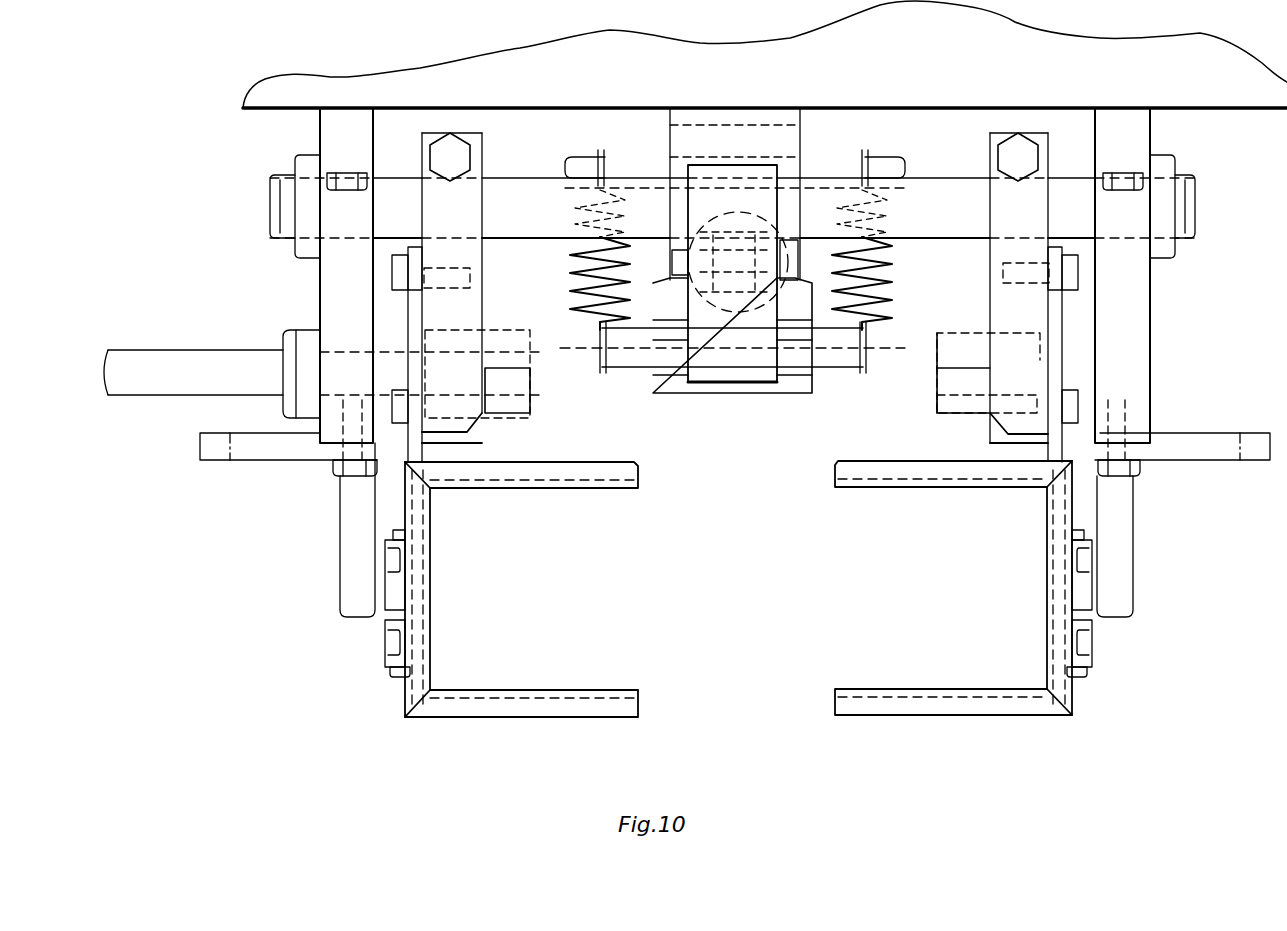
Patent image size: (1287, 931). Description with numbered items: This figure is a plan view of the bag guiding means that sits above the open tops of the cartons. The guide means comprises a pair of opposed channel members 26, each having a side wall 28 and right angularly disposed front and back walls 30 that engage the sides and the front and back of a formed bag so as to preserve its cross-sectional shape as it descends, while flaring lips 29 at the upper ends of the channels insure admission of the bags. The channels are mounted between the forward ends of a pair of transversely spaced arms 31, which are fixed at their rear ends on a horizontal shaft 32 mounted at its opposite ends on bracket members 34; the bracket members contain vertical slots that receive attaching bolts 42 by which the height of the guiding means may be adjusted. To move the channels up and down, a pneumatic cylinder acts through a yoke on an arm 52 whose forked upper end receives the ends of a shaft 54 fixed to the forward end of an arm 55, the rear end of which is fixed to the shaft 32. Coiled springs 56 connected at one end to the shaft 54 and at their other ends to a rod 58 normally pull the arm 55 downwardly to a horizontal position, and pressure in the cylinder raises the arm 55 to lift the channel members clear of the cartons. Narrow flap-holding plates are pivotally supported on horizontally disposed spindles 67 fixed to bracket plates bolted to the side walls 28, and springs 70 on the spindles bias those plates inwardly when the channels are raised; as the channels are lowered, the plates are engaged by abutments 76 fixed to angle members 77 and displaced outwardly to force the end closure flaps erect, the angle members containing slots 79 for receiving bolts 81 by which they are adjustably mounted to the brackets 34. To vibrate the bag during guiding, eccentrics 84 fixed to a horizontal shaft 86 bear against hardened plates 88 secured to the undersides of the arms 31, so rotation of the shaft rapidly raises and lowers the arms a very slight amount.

The channel member 26 is at (810, 674).
The side wall 28 is at (430, 508).
The flaring lip 29 is at (645, 480).
The front and back walls 30 is at (545, 482).
The arm 31 is at (410, 297).
The horizontal shaft 32 is at (915, 185).
The bracket member 34 is at (330, 133).
The attaching bolt 42 is at (332, 185).
The arm 52 is at (792, 385).
The shaft 54 is at (621, 350).
The arm 55 is at (722, 375).
The coiled spring 56 is at (590, 262).
The rod 58 is at (825, 165).
The spindle 67 is at (395, 672).
The spring 70 is at (395, 620).
The abutment 76 is at (340, 595).
The angle member 77 is at (202, 455).
The slot 79 is at (277, 452).
The bolt 81 is at (337, 472).
The eccentric 84 is at (530, 400).
The horizontal shaft 86 is at (215, 362).
The hardened plate 88 is at (478, 432).